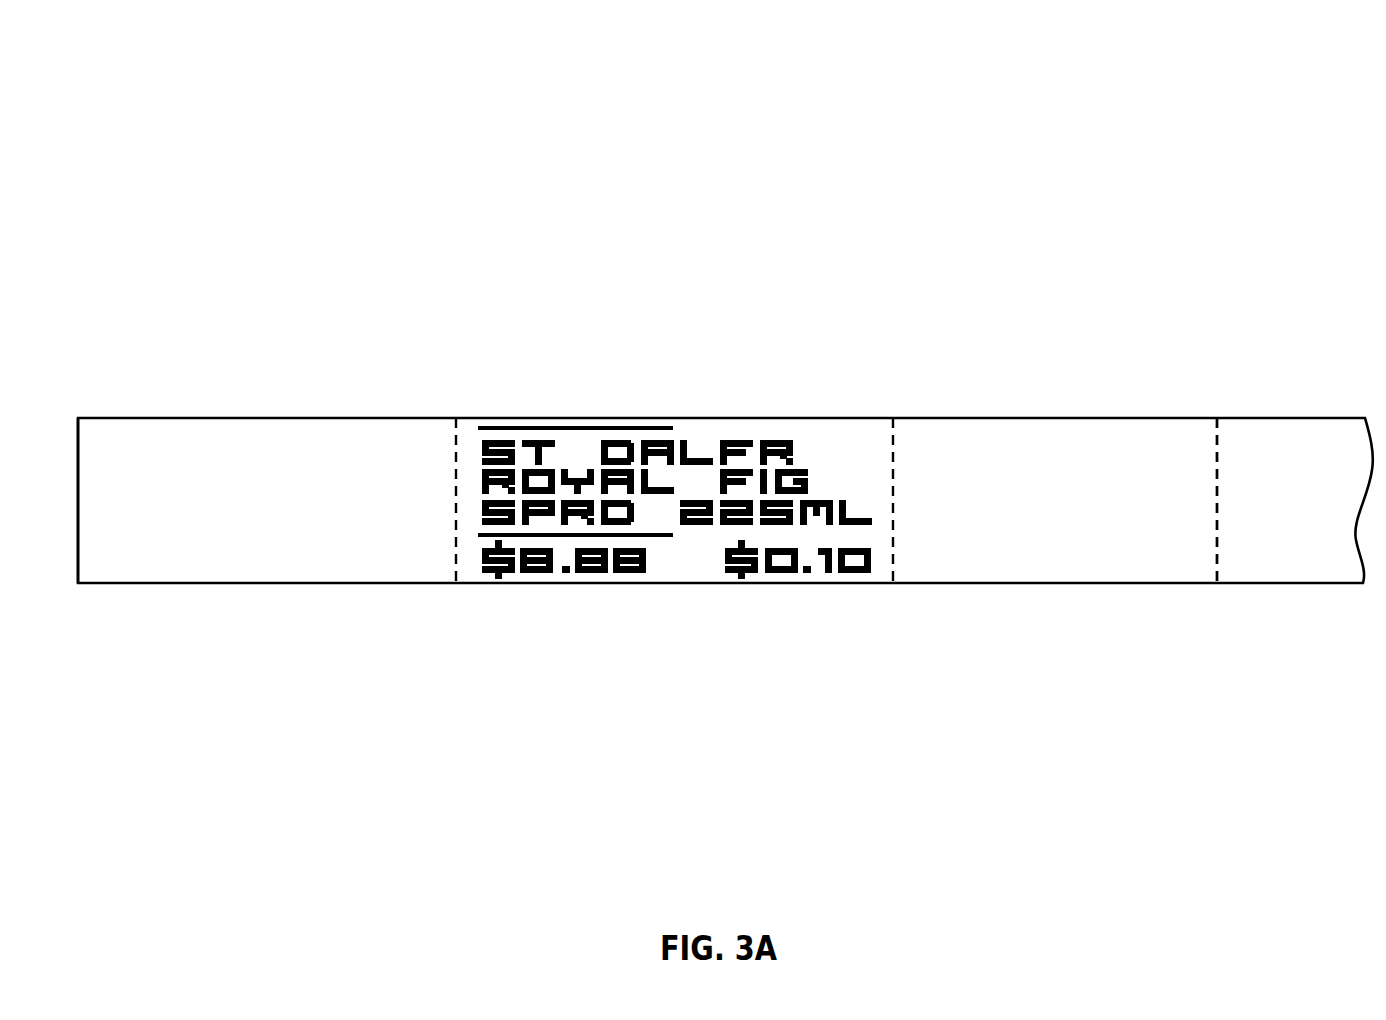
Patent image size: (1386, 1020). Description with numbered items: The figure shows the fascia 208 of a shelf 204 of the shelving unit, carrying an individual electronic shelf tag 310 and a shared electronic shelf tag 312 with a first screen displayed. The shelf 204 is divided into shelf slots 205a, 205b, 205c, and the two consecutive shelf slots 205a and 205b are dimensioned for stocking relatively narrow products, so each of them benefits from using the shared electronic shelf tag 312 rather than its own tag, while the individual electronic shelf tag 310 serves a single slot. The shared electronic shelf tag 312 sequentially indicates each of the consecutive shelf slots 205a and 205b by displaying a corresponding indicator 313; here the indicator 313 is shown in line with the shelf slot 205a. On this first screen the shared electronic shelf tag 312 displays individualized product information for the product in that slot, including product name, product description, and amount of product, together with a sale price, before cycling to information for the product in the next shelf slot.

The shelf 204 is at (135, 162).
The shelf slot 205a is at (594, 406).
The shelf slot 205b is at (814, 405).
The shelf slot 205c is at (1082, 405).
The fascia 208 is at (150, 565).
The individual electronic shelf tag 310 is at (1075, 566).
The shared electronic shelf tag 312 is at (893, 607).
The indicator 313 is at (478, 428).